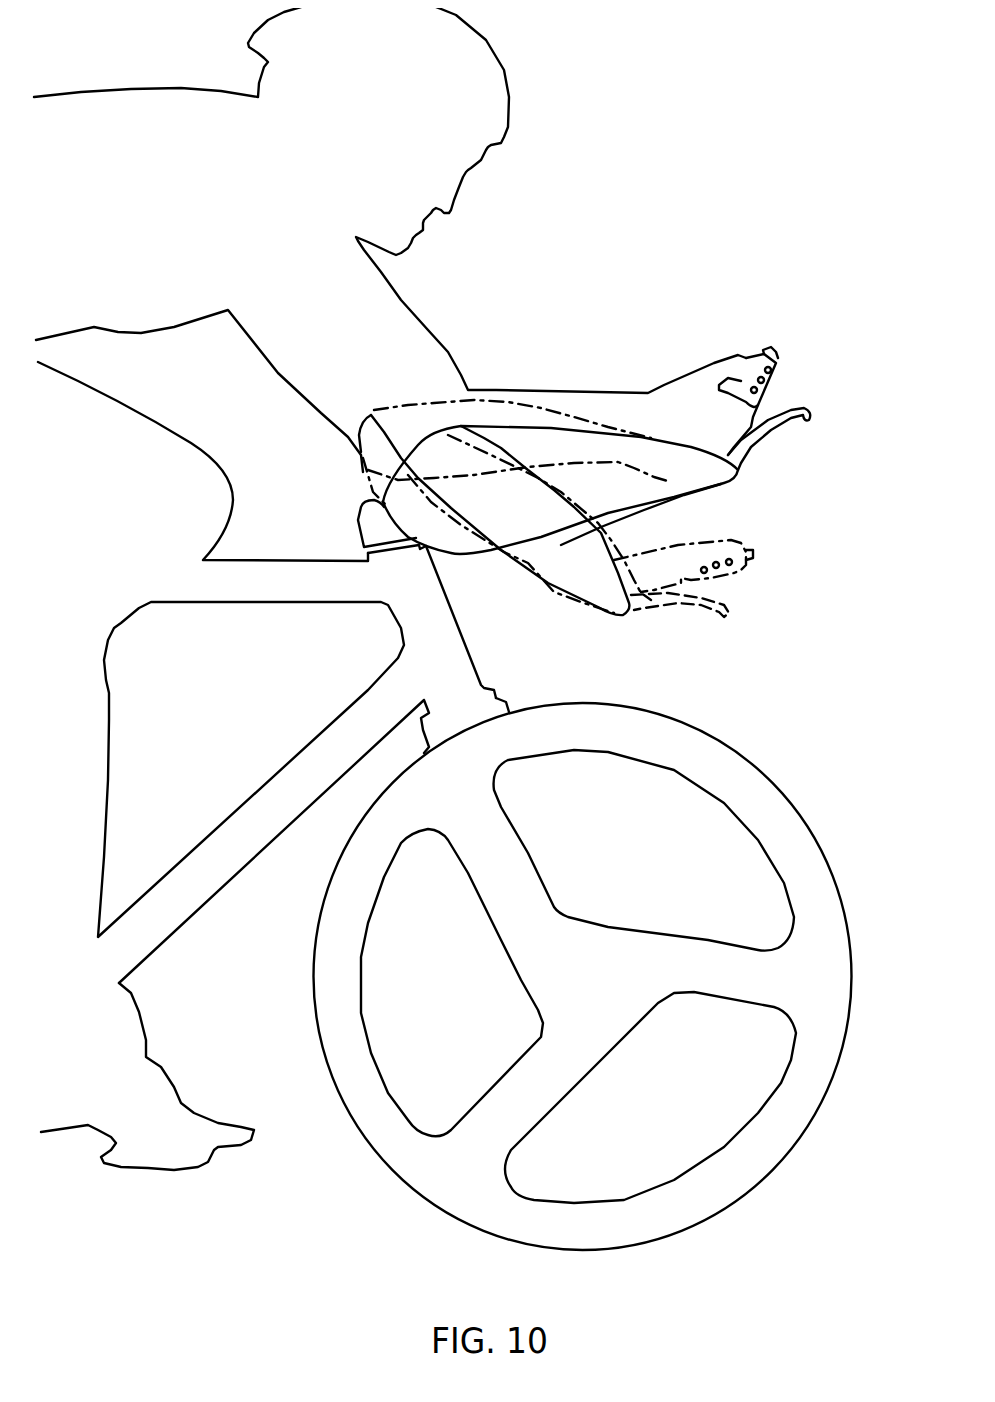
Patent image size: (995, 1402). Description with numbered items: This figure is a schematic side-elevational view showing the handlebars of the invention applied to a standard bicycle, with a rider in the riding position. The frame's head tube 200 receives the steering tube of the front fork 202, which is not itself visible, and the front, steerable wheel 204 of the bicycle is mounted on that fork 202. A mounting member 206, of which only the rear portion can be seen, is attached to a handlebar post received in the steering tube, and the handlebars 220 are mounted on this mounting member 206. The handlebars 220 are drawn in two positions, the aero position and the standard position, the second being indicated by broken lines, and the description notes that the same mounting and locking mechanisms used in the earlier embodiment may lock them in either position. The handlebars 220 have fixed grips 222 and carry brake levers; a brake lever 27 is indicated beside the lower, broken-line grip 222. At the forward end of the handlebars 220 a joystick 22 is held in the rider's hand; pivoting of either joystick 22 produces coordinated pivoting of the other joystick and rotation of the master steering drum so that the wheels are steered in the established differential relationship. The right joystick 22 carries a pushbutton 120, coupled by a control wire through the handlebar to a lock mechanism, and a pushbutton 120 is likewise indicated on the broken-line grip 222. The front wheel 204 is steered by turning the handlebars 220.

The joystick 22 is at (775, 373).
The brake lever 27 is at (688, 612).
The pushbutton 120 is at (770, 352).
The head tube 200 is at (452, 642).
The front fork 202 is at (505, 702).
The front wheel 204 is at (775, 785).
The mounting member 206 is at (362, 520).
The handlebars 220 is at (652, 437).
The fixed grips 222 is at (710, 535).